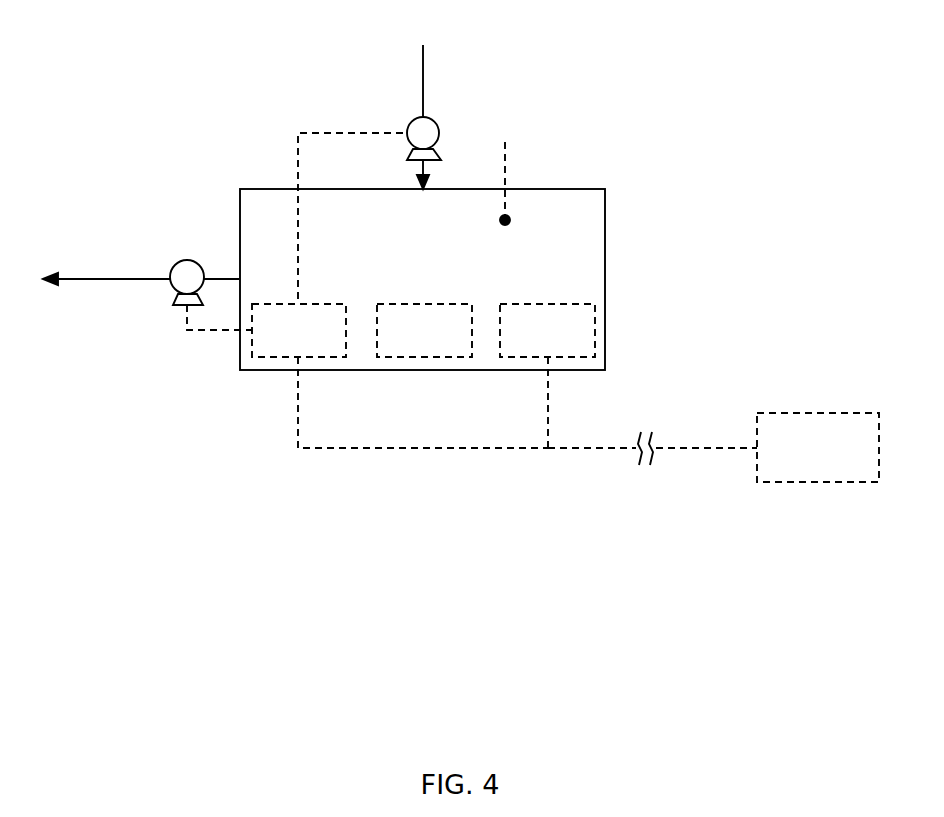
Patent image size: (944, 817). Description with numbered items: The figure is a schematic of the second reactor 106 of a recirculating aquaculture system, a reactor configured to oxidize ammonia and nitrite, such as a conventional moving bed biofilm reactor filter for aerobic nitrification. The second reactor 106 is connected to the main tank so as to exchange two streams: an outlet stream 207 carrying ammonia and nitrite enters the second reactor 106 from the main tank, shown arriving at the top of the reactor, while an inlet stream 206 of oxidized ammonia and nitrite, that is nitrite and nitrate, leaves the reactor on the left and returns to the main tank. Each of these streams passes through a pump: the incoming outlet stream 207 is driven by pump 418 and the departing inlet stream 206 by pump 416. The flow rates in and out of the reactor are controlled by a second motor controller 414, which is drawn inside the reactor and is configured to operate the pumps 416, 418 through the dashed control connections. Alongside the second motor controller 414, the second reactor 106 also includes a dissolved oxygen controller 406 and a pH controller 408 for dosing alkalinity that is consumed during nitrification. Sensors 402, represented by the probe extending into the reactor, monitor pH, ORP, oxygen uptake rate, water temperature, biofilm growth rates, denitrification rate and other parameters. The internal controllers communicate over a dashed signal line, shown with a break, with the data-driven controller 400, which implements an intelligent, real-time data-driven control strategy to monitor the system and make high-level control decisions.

The second reactor 106 is at (422, 279).
The inlet stream 206 is at (105, 279).
The outlet stream 207 is at (423, 98).
The data-driven controller 400 is at (713, 447).
The sensors 402 is at (505, 142).
The dissolved oxygen controller 406 is at (547, 376).
The pH controller 408 is at (424, 330).
The second motor controller 414 is at (400, 376).
The pump 416 is at (177, 303).
The pump 418 is at (441, 130).